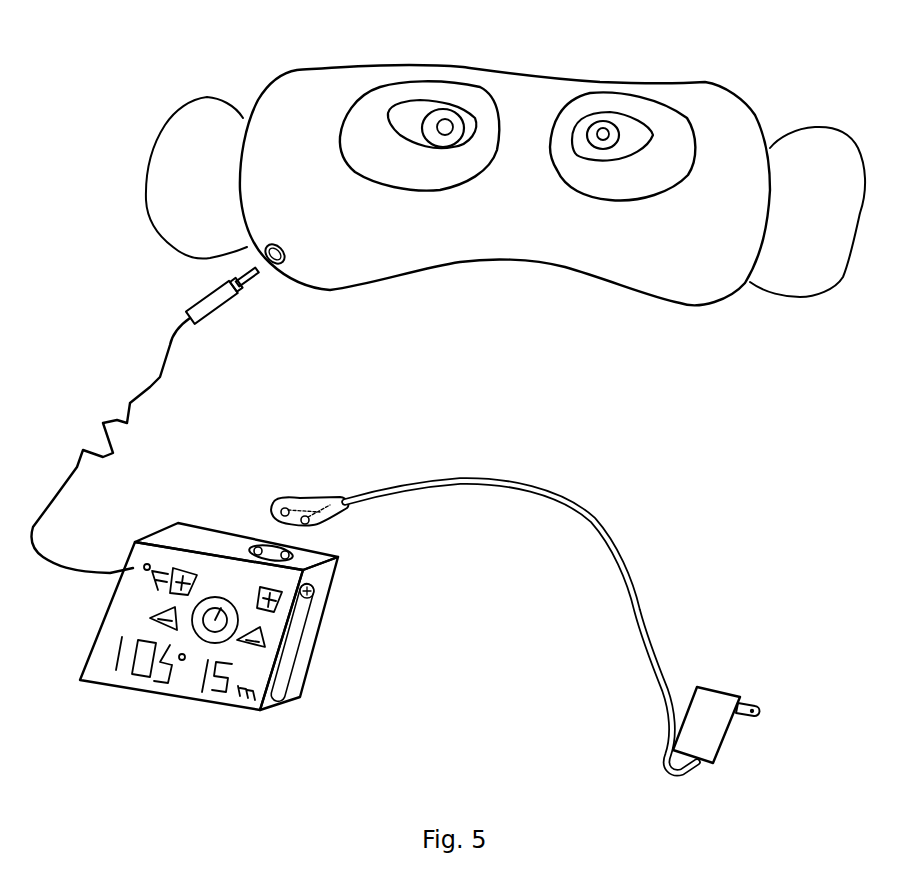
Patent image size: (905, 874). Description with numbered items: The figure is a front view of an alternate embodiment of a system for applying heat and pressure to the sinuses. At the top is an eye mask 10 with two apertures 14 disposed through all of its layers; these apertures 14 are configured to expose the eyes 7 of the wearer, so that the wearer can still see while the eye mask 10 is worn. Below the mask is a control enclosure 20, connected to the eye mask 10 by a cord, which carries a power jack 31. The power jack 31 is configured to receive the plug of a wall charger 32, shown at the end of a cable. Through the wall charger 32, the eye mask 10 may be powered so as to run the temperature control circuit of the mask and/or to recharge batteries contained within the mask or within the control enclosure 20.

The eye mask 10 is at (597, 72).
The apertures 14 is at (363, 170).
The eyes 7 is at (424, 107).
The control enclosure 20 is at (188, 512).
The power jack 31 is at (300, 556).
The wall charger 32 is at (710, 697).